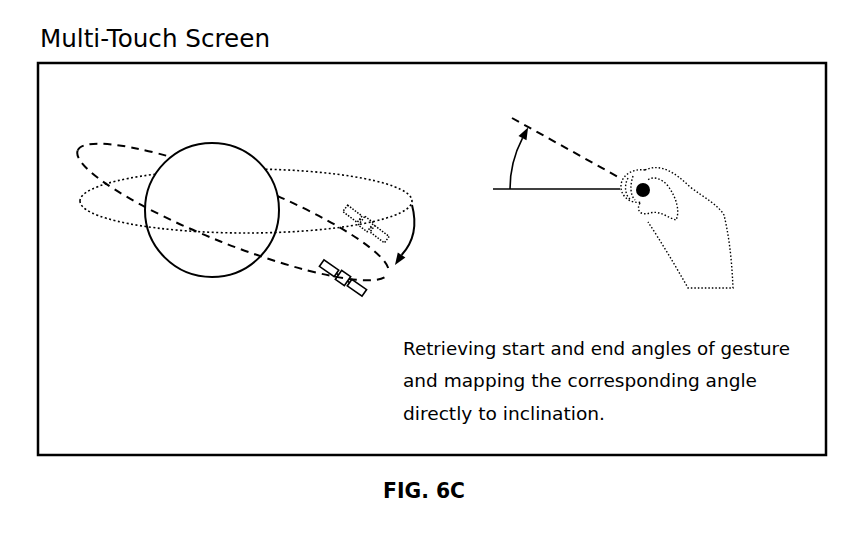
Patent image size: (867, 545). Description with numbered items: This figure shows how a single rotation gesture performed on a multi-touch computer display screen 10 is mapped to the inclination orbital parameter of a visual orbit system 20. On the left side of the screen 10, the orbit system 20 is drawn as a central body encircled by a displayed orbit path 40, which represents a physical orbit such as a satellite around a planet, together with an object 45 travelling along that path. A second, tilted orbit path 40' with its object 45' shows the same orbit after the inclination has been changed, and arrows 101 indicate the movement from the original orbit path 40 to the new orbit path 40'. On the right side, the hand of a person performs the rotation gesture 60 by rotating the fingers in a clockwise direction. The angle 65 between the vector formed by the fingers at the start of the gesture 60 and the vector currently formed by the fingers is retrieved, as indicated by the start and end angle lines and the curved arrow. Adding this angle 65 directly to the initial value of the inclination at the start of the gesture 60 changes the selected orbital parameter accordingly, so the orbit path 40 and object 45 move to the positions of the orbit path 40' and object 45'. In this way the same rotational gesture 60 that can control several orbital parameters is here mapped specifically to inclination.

The computer display screen 10 is at (595, 56).
The visual orbit system 20 is at (303, 136).
The orbit path 40 is at (246, 224).
The orbit path 40' is at (233, 182).
The object 45 is at (347, 214).
The object 45' is at (336, 307).
The rotation gesture 60 is at (691, 169).
The angle 65 is at (513, 162).
The inclination change arrows 101 is at (373, 171).